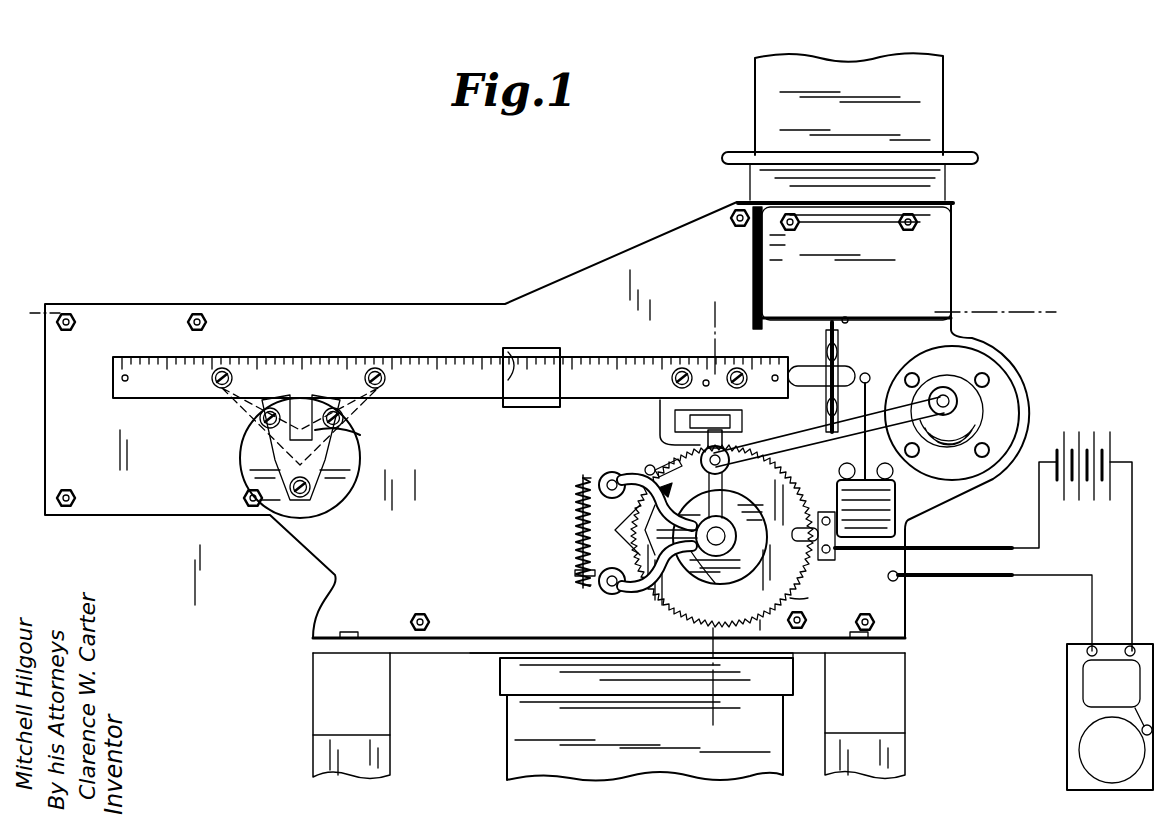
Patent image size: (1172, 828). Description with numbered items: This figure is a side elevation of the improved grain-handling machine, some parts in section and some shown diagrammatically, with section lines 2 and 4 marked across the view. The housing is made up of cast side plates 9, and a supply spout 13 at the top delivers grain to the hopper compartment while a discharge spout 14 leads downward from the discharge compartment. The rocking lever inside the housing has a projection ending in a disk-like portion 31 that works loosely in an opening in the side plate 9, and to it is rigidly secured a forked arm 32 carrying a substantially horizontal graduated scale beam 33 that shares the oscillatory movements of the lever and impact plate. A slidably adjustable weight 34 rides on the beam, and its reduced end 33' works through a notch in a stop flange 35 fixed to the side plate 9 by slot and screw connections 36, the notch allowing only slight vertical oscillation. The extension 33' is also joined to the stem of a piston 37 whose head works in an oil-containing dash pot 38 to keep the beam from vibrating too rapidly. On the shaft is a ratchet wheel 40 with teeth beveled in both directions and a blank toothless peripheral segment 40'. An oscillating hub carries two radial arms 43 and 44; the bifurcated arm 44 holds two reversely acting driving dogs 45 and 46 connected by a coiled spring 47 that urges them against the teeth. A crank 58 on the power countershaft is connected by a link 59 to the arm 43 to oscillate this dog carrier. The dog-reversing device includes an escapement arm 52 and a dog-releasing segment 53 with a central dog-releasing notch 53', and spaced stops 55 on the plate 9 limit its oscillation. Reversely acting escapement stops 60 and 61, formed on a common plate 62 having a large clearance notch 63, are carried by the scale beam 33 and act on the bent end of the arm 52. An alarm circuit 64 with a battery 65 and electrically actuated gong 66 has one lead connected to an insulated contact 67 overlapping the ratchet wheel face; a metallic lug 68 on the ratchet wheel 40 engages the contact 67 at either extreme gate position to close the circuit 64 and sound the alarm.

The section line 2- 2 is at (540, 313).
The section line 4- 4 is at (711, 513).
The side plate 9 is at (537, 420).
The supply spout 13 is at (930, 122).
The discharge spout 14 is at (631, 717).
The disk-like portion 31 is at (262, 445).
The forked arm 32 is at (360, 438).
The graduated scale beam 33 is at (450, 400).
The reduced end 33' is at (817, 349).
The slidably adjustable weight 34 is at (548, 408).
The stop flange 35 is at (850, 318).
The slot and screw connections 36 is at (805, 400).
The piston 37 is at (900, 452).
The dash pot 38 is at (898, 520).
The ratchet wheel 40 is at (722, 536).
The blank peripheral segment 40' is at (824, 612).
The arm 43 is at (663, 484).
The arm 44 is at (706, 578).
The driving dog 45 is at (596, 504).
The driving dog 46 is at (585, 571).
The coiled spring 47 is at (592, 535).
The escapement arm 52 is at (718, 446).
The dog-releasing segment 53 is at (646, 549).
The dog-releasing notch 53' is at (535, 531).
The stops 55 is at (690, 428).
The crank 58 is at (947, 398).
The link 59 is at (858, 440).
The escapement stop 60 is at (690, 452).
The escapement stop 61 is at (752, 386).
The plate 62 is at (660, 412).
The clearance notch 63 is at (690, 432).
The electric circuit 64 is at (1132, 548).
The battery 65 is at (1078, 455).
The electrically actuated gong 66 is at (1102, 685).
The insulated contact 67 is at (902, 551).
The metallic lug 68 is at (706, 436).